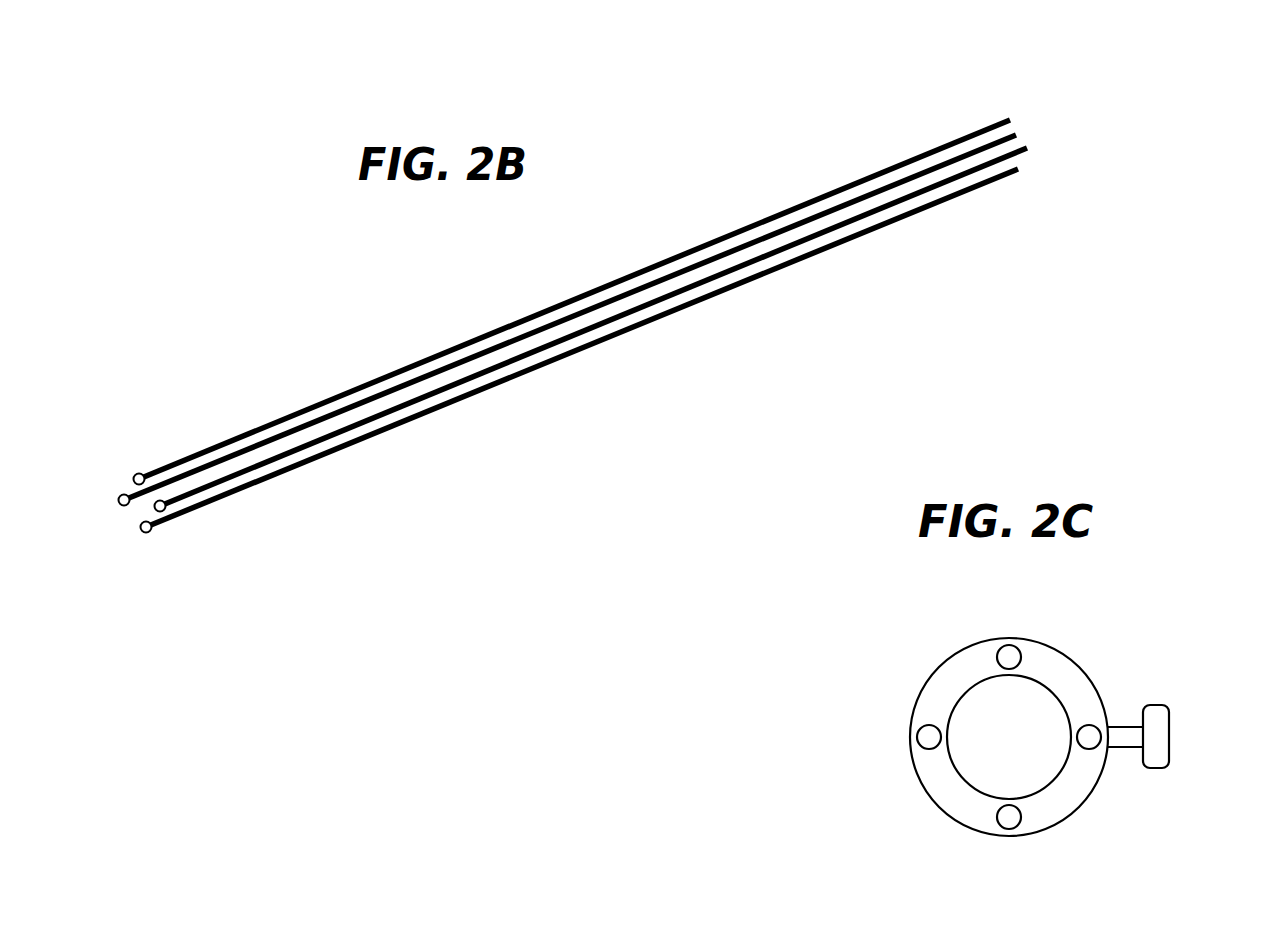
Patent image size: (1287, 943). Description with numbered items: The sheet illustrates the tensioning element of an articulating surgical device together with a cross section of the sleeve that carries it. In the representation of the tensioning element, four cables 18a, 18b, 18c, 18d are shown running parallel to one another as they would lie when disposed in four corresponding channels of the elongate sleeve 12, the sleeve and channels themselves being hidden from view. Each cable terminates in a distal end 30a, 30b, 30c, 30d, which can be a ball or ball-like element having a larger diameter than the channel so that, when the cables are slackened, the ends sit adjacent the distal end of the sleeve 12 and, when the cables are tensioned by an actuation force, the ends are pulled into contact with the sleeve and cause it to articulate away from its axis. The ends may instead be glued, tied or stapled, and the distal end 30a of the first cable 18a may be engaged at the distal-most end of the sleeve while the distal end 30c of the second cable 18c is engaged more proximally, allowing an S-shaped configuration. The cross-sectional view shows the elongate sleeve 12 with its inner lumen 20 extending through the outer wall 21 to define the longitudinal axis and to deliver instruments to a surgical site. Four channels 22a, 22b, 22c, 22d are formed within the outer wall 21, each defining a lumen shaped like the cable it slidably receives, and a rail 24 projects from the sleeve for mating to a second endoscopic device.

In FIG. 2C, the elongate sleeve 12 is at (1046, 742).
In FIG. 2B, the cable 18a is at (1010, 120).
In FIG. 2B, the cable 18b is at (1016, 135).
In FIG. 2B, the cable 18c is at (1027, 148).
In FIG. 2B, the cable 18d is at (1018, 169).
In FIG. 2C, the inner lumen 20 is at (1024, 750).
In FIG. 2C, the outer wall 21 is at (1057, 800).
In FIG. 2C, the channel 22a is at (1008, 818).
In FIG. 2C, the channel 22b is at (925, 737).
In FIG. 2C, the channel 22c is at (1009, 650).
In FIG. 2C, the channel 22d is at (1089, 737).
In FIG. 2C, the rail 24 is at (1169, 737).
In FIG. 2B, the distal end 30a is at (137, 474).
In FIG. 2B, the distal end 30b is at (120, 496).
In FIG. 2B, the distal end 30c is at (163, 508).
In FIG. 2B, the distal end 30d is at (145, 532).